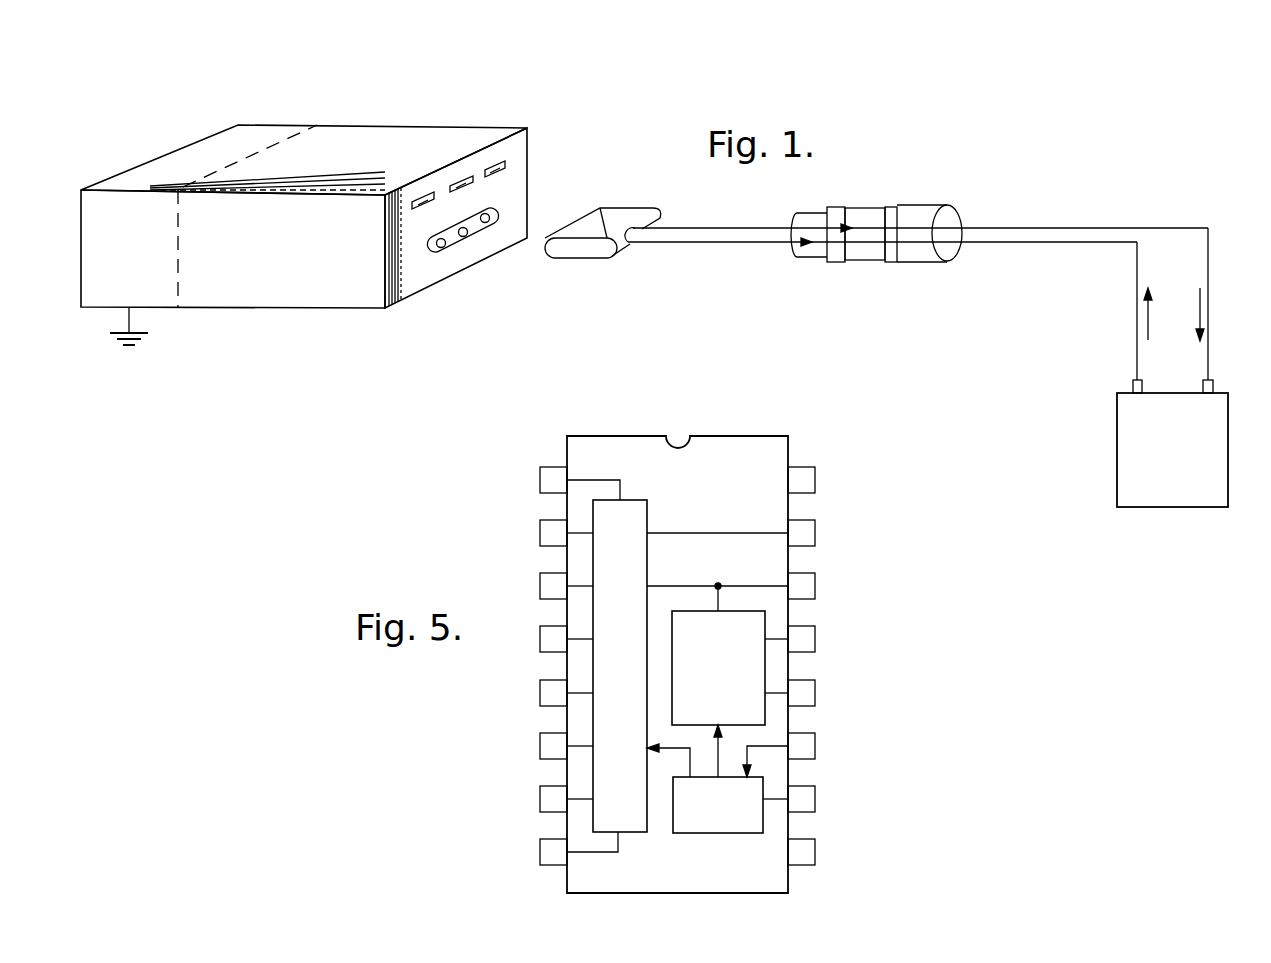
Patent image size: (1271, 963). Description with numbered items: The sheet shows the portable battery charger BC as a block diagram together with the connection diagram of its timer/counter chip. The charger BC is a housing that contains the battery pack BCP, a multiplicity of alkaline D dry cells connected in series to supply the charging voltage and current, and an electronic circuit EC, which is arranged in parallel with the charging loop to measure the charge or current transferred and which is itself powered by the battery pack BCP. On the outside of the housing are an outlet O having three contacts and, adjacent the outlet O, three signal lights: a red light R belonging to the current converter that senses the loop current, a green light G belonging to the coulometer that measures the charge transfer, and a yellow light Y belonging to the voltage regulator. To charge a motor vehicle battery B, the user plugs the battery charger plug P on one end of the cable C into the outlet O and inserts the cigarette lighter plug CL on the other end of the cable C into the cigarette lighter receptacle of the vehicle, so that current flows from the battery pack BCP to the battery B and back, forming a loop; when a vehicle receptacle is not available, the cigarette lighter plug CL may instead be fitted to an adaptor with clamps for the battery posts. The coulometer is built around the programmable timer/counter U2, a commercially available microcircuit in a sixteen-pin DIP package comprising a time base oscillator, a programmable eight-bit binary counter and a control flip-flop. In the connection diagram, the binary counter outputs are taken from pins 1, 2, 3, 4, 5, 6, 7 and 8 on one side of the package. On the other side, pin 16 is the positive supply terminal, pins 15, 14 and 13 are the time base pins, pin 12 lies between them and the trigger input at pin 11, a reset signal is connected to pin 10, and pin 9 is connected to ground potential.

In FIG. 1, the battery charger BC is at (286, 298).
In FIG. 1, the battery pack BCP is at (241, 140).
In FIG. 1, the electronic circuit EC is at (405, 97).
In FIG. 1, the red light R is at (437, 193).
In FIG. 1, the green light G is at (476, 181).
In FIG. 1, the yellow light Y is at (508, 173).
In FIG. 1, the outlet O is at (458, 245).
In FIG. 1, the battery charger plug P is at (615, 253).
In FIG. 1, the cable C is at (723, 236).
In FIG. 1, the cigarette lighter plug CL is at (943, 212).
In FIG. 1, the battery B is at (1178, 503).
In FIG. 5, the programmable timer/counter U2 is at (664, 664).
In FIG. 5, the pin 1 is at (580, 471).
In FIG. 5, the pin 2 is at (566, 521).
In FIG. 5, the pin 3 is at (566, 574).
In FIG. 5, the pin 4 is at (566, 627).
In FIG. 5, the pin 5 is at (566, 681).
In FIG. 5, the pin 6 is at (566, 734).
In FIG. 5, the pin 7 is at (566, 787).
In FIG. 5, the pin 8 is at (579, 840).
In FIG. 5, the pin 9 is at (820, 840).
In FIG. 5, the pin 10 is at (814, 787).
In FIG. 5, the pin 11 is at (809, 743).
In FIG. 5, the pin 12 Modulation Input 12 is at (837, 686).
In FIG. 5, the pin 13 is at (831, 630).
In FIG. 5, the pin 14 is at (775, 580).
In FIG. 5, the pin 15 is at (772, 524).
In FIG. 5, the pin 16 is at (818, 468).